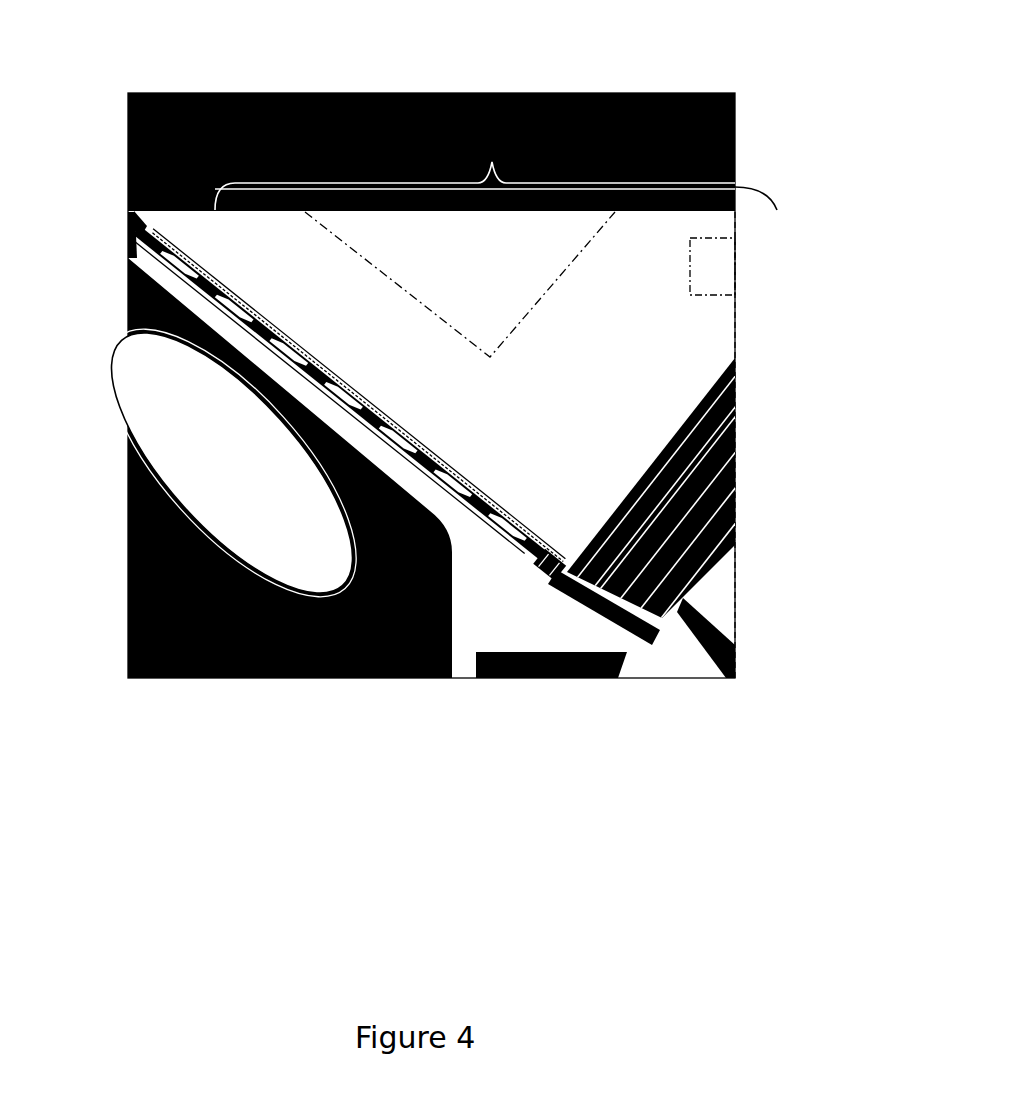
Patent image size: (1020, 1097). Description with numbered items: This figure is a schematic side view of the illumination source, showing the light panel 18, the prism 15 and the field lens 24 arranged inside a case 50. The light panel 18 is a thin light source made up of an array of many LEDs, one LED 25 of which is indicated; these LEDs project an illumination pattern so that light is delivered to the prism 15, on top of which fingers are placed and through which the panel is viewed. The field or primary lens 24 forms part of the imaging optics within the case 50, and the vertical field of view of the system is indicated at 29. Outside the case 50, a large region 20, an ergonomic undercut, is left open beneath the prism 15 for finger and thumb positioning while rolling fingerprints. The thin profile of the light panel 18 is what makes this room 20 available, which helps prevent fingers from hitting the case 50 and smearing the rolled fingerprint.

The prism 15 is at (545, 371).
The light panel 18 is at (128, 229).
The region 20 is at (235, 477).
The field lens 24 is at (683, 522).
The LED 25 is at (190, 272).
The vertical field of view 29 is at (545, 146).
The case 50 is at (423, 518).